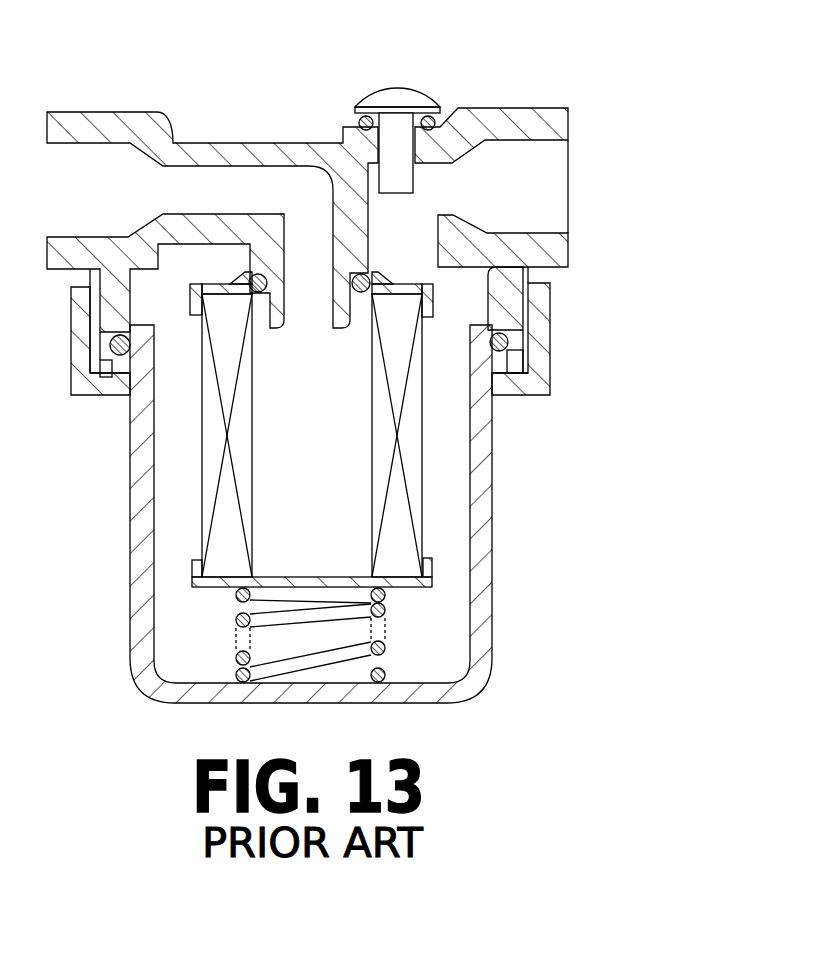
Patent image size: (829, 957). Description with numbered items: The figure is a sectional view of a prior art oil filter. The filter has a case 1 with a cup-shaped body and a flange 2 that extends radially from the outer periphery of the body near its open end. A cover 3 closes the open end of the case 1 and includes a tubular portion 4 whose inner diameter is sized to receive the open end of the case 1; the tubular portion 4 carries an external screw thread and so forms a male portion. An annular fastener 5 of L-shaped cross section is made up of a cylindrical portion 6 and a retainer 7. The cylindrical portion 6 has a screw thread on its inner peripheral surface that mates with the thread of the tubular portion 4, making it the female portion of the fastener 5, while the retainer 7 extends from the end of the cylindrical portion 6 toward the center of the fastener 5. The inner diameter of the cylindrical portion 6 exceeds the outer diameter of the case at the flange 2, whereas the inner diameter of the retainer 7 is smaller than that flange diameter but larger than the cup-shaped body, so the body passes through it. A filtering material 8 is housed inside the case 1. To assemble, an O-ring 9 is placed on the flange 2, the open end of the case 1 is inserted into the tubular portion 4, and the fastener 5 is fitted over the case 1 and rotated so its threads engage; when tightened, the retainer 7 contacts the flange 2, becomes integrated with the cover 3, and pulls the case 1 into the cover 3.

The case 1 is at (493, 492).
The flange 2 is at (510, 363).
The cover 3 is at (497, 110).
The tubular portion 4 is at (493, 297).
The annular fastener 5 is at (591, 327).
The cylindrical portion 6 is at (528, 285).
The retainer 7 is at (510, 383).
The filtering material 8 is at (427, 530).
The O-ring 9 is at (515, 345).